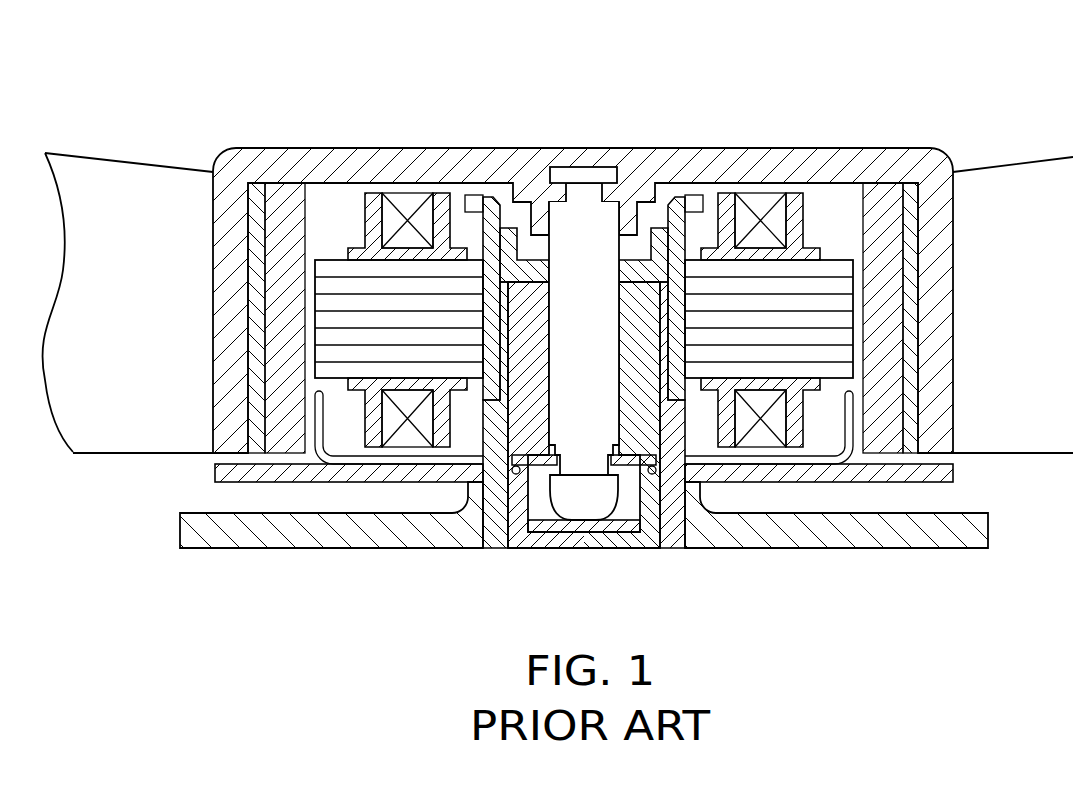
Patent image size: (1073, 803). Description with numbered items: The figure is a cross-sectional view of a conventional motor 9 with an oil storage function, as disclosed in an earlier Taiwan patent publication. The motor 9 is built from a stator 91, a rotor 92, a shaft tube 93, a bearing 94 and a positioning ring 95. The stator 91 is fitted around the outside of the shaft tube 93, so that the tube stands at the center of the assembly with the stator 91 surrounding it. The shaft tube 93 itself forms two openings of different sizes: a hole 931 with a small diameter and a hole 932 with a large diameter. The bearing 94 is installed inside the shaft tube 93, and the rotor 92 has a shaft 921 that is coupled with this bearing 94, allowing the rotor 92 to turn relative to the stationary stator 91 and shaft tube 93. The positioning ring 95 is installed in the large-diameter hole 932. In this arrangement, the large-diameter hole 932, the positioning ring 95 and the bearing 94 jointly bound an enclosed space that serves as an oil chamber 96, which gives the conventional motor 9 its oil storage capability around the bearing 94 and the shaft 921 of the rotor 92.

The motor 9 is at (558, 316).
The stator 91 is at (833, 272).
The rotor 92 is at (342, 162).
The shaft 921 is at (587, 228).
The shaft tube 93 is at (662, 378).
The hole 931 is at (652, 392).
The hole 932 is at (662, 240).
The bearing 94 is at (534, 430).
The positioning ring 95 is at (512, 228).
The oil chamber 96 is at (498, 257).